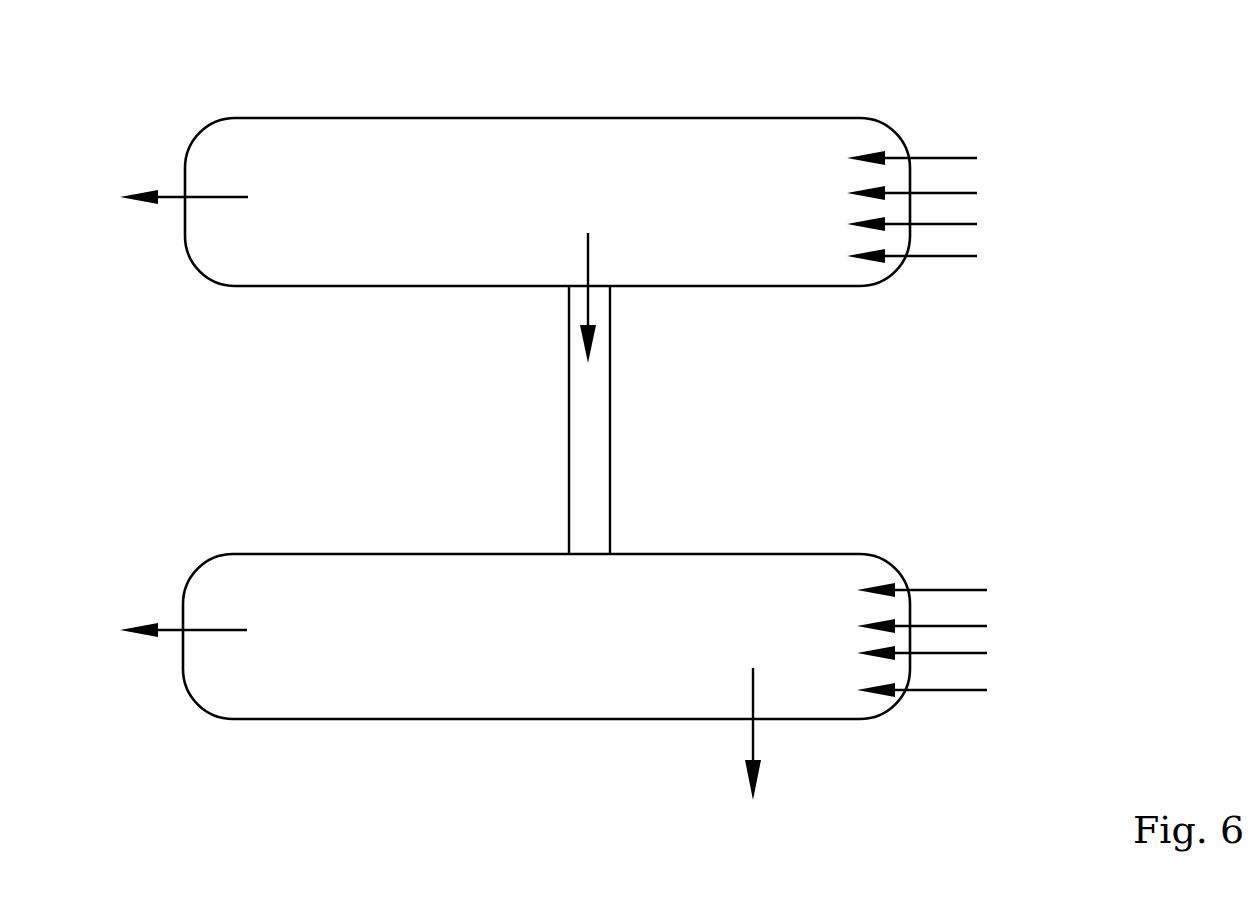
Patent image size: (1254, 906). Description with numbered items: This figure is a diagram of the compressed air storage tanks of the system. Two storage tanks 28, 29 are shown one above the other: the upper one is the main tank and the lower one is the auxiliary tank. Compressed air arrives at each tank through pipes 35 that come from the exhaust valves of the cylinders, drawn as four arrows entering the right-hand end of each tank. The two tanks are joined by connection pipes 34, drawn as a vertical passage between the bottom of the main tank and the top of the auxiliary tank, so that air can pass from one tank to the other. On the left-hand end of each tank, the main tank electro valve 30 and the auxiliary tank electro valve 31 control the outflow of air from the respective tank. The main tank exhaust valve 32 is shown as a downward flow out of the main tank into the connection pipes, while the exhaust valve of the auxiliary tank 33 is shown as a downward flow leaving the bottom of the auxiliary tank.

The storage tank 28 is at (547, 243).
The storage tank 29 is at (546, 610).
The main tank electro valve 30 is at (146, 276).
The auxiliary tank electro valve 31 is at (142, 527).
The main tank exhaust valve 32 is at (608, 333).
The exhaust valve of the auxiliary tank 33 is at (818, 735).
The connection pipes 34 is at (590, 485).
The pipes 35 is at (986, 361).